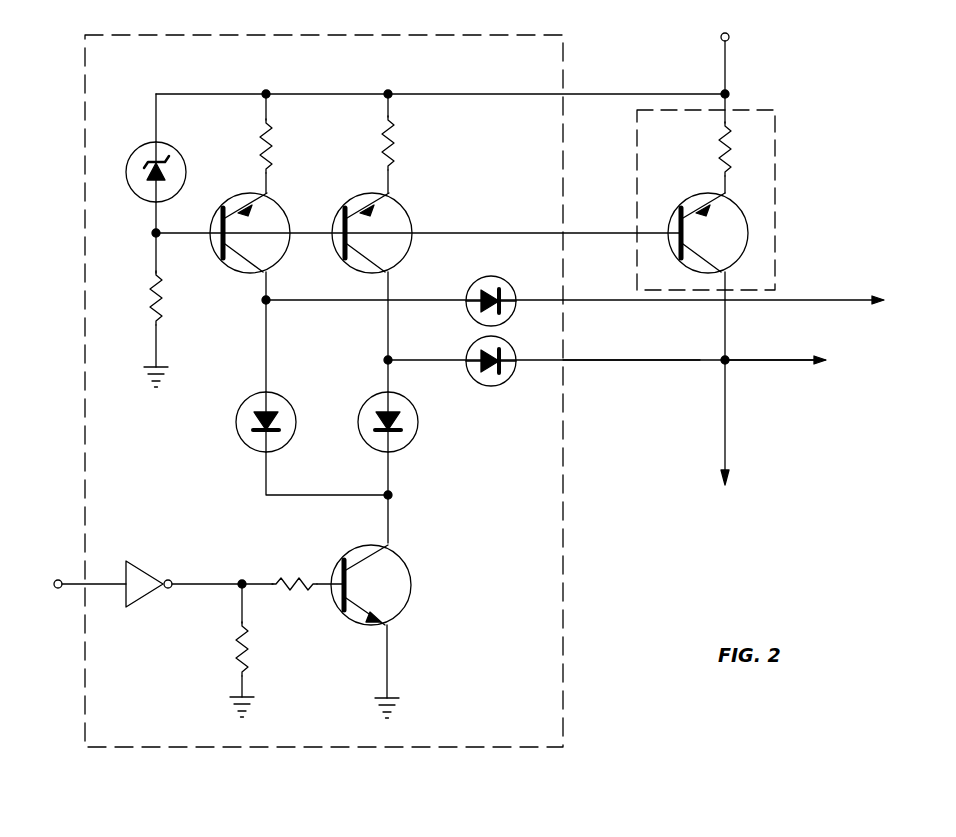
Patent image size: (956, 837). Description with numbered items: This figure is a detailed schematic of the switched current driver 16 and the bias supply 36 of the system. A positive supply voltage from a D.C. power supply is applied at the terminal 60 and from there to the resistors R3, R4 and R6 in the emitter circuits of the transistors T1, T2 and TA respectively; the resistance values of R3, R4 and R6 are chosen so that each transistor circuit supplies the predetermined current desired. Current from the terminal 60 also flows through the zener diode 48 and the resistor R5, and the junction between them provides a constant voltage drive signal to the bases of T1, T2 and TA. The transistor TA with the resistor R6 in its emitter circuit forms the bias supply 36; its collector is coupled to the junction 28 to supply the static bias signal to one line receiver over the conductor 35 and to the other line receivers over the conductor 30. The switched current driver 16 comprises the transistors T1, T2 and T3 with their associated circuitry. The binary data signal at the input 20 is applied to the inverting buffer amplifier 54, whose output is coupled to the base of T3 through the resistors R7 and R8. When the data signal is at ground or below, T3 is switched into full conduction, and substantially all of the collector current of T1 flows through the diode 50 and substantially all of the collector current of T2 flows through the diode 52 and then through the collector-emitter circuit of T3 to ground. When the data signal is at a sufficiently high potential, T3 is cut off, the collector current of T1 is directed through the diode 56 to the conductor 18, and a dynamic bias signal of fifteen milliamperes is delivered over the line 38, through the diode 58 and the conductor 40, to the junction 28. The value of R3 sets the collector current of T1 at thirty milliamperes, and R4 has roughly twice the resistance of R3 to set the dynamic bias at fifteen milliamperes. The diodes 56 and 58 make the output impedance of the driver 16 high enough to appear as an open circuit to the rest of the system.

The switched current driver 16 is at (247, 36).
The conductor 18 is at (848, 302).
The input terminal A 20 is at (60, 590).
The junction 28 is at (720, 366).
The conductor 30 is at (727, 458).
The conductor 35 is at (812, 366).
The bias supply 36 is at (776, 121).
The output line 38 is at (722, 328).
The conductor 40 is at (598, 363).
The zener diode 48 is at (140, 150).
The diode 50 is at (236, 428).
The diode 52 is at (414, 440).
The inverting buffer amplifier 54 is at (138, 565).
The diode 56 is at (470, 282).
The diode 58 is at (505, 380).
The terminal 60 is at (731, 37).
The transistor T1 is at (234, 193).
The transistor T2 is at (396, 202).
The transistor T3 is at (410, 563).
The transistor TA is at (690, 196).
The resistor R3 is at (283, 143).
The resistor R4 is at (405, 143).
The resistor R5 is at (168, 310).
The resistor R6 is at (740, 143).
The resistor R7 is at (255, 650).
The resistor R8 is at (293, 571).